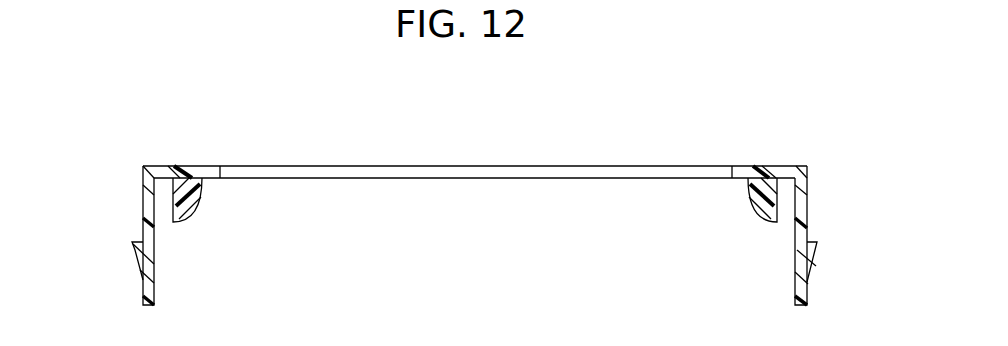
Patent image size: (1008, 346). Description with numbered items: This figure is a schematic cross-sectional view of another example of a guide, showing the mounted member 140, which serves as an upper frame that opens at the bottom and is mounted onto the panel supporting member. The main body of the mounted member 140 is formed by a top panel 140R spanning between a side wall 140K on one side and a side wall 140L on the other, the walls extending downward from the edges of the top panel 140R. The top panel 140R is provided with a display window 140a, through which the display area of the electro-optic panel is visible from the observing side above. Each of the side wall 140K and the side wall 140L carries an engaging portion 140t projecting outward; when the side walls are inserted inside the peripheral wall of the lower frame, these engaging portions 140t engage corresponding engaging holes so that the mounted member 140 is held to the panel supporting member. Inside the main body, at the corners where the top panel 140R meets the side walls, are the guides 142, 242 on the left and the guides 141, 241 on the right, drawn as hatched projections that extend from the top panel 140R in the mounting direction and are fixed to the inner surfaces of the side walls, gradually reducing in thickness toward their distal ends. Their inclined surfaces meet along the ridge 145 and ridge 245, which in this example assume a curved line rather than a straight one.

The mounted member 140 is at (152, 138).
The display window 140a is at (430, 167).
The top panel 140R is at (580, 166).
The side wall 140L is at (147, 203).
The side wall 140K is at (804, 190).
The engaging portion 140t is at (140, 263).
The guide 142 is at (210, 141).
The guide 242 is at (195, 180).
The guide 141 is at (740, 146).
The guide 241 is at (770, 185).
The ridge 145 is at (475, 207).
The ridge 245 is at (196, 206).